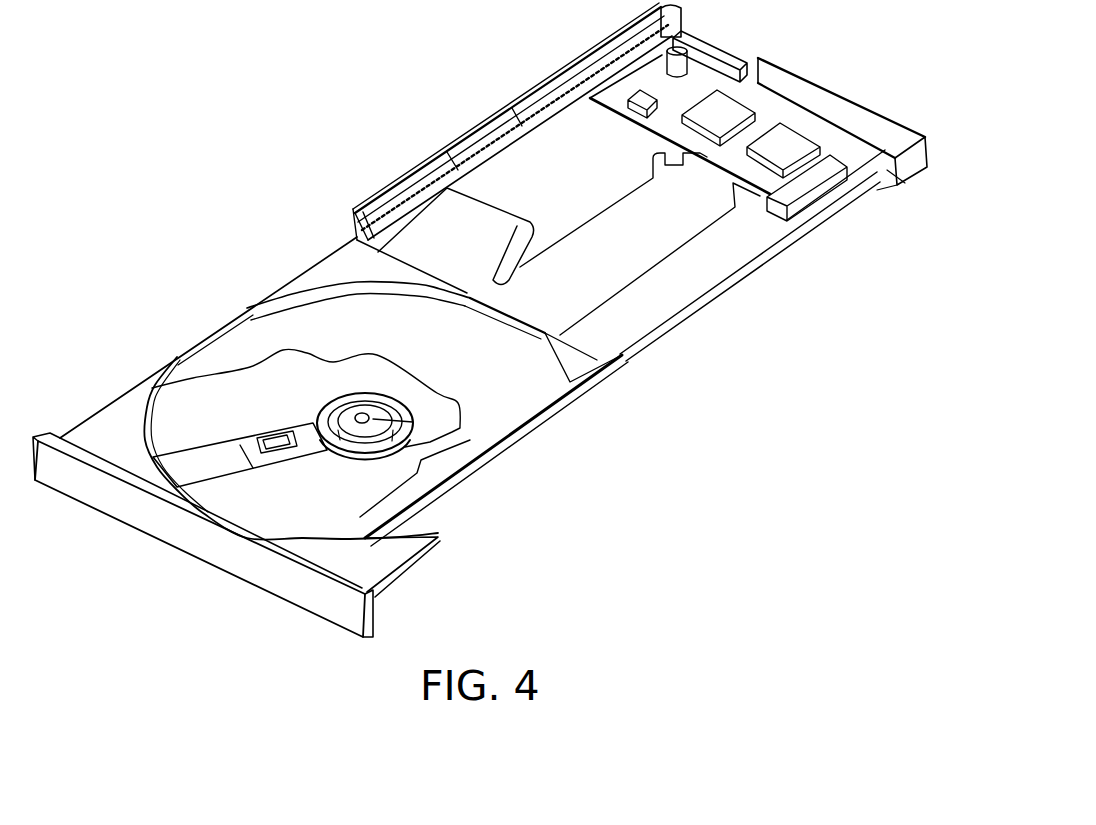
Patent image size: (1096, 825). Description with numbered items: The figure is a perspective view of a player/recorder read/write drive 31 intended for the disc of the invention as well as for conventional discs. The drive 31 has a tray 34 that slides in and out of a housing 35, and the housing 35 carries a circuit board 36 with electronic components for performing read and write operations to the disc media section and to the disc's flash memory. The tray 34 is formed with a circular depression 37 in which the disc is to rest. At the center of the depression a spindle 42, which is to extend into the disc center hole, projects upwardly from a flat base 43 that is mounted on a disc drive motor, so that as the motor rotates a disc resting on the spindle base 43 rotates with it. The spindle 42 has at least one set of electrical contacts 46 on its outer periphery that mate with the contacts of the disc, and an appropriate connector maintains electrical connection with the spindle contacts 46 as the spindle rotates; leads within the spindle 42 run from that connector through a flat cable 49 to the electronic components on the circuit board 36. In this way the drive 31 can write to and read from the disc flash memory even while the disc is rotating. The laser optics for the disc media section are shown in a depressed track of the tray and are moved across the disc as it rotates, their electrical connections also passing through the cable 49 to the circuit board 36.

The drive 31 is at (162, 88).
The tray 34 is at (113, 428).
The housing 35 is at (514, 100).
The circuit board 36 is at (864, 154).
The circular depression 37 is at (293, 325).
The spindle 42 is at (373, 405).
The flat base 43 is at (345, 455).
The electrical contacts 46 is at (395, 440).
The flat cable 49 is at (484, 218).